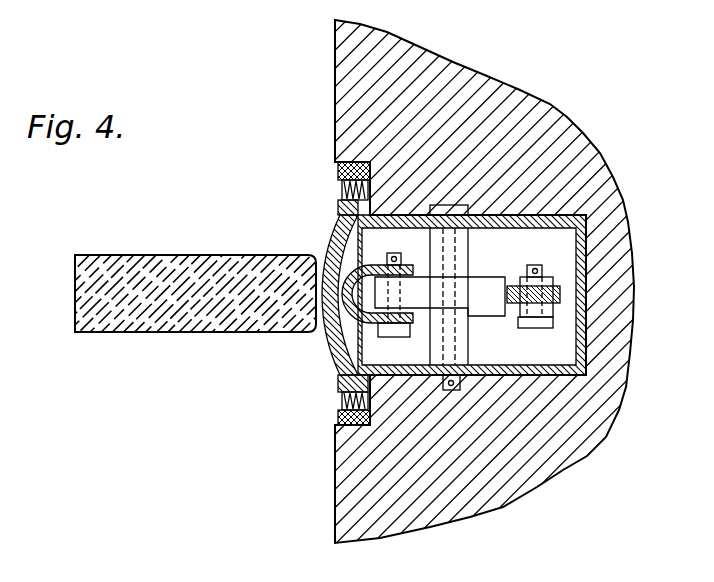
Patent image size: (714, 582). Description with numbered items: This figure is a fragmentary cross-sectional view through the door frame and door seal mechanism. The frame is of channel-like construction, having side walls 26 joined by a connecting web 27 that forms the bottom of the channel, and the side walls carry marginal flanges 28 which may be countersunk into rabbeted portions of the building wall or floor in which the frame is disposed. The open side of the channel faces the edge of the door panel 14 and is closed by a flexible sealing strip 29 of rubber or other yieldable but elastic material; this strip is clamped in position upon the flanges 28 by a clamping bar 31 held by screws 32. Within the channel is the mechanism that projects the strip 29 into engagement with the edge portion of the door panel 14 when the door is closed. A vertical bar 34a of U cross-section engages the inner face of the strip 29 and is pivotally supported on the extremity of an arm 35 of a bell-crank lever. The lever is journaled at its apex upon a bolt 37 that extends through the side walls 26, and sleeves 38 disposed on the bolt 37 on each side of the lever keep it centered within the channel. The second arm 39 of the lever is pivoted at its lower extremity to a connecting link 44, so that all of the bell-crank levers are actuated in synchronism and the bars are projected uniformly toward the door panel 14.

The door panel 14 is at (108, 258).
The side wall 26 is at (545, 375).
The connecting web 27 is at (587, 238).
The marginal flange 28 is at (337, 176).
The flexible sealing strip 29 is at (333, 328).
The clamping bar 31 is at (337, 222).
The screw 32 is at (337, 200).
The vertical bar 34a is at (365, 324).
The arm of bell-crank lever 35 is at (422, 285).
The bolt 37 is at (458, 265).
The sleeve 38 is at (468, 262).
The second arm of bell-crank lever 39 is at (487, 282).
The connecting link 44 is at (560, 293).